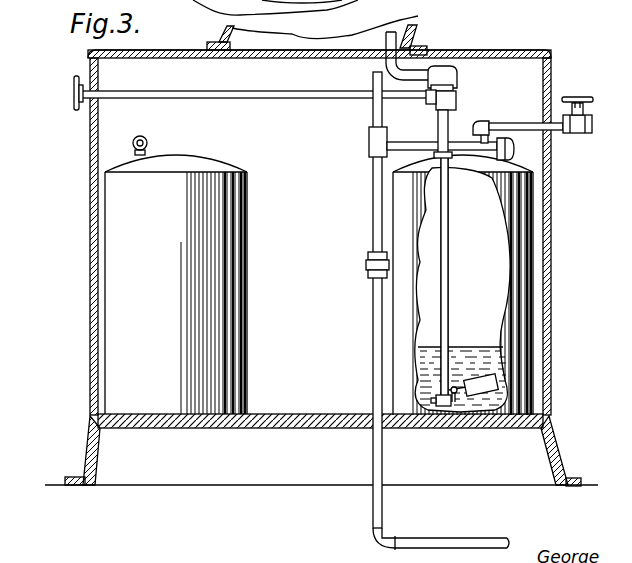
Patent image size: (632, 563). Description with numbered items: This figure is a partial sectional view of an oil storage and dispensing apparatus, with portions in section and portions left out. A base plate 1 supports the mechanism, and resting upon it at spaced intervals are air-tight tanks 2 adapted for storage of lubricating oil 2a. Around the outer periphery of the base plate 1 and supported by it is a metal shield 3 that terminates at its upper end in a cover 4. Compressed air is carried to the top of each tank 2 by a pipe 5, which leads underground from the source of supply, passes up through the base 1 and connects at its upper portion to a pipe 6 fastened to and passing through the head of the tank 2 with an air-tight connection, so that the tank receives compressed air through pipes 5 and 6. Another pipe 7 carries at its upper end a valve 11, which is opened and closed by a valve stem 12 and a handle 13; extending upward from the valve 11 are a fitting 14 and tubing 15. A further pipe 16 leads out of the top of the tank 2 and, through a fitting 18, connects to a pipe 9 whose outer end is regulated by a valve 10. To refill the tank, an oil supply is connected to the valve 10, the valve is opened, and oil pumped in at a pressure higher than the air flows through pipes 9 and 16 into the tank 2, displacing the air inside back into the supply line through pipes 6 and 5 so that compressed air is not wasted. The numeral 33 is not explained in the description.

The base plate 1 is at (562, 444).
The tank 2 is at (245, 298).
The oil 2a is at (460, 344).
The metal shield 3 is at (551, 318).
The cover 4 is at (500, 53).
The pipe 5 is at (373, 334).
The pipe 6 is at (405, 142).
The pipe 7 is at (443, 246).
The pipe 9 is at (555, 122).
The valve 10 is at (581, 134).
The valve 11 is at (451, 97).
The valve stem 12 is at (243, 98).
The handle 13 is at (80, 110).
The fitting 14 is at (441, 74).
The tubing 15 is at (398, 32).
The pipe 16 is at (486, 152).
The fitting 18 is at (485, 120).
The unknown part 33 is at (620, 82).